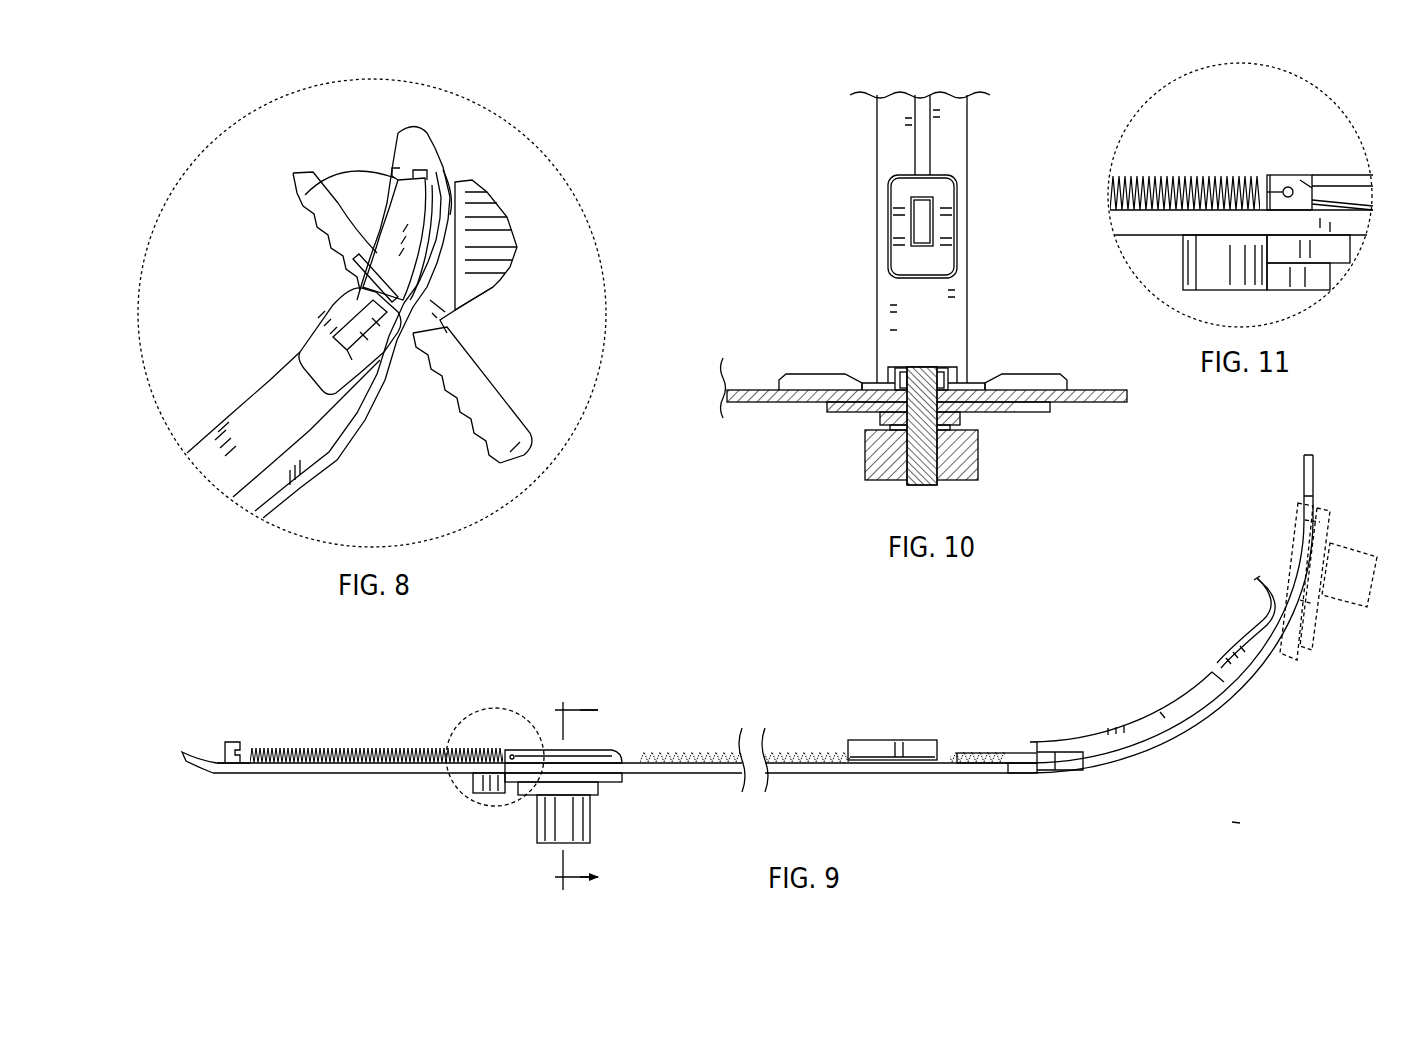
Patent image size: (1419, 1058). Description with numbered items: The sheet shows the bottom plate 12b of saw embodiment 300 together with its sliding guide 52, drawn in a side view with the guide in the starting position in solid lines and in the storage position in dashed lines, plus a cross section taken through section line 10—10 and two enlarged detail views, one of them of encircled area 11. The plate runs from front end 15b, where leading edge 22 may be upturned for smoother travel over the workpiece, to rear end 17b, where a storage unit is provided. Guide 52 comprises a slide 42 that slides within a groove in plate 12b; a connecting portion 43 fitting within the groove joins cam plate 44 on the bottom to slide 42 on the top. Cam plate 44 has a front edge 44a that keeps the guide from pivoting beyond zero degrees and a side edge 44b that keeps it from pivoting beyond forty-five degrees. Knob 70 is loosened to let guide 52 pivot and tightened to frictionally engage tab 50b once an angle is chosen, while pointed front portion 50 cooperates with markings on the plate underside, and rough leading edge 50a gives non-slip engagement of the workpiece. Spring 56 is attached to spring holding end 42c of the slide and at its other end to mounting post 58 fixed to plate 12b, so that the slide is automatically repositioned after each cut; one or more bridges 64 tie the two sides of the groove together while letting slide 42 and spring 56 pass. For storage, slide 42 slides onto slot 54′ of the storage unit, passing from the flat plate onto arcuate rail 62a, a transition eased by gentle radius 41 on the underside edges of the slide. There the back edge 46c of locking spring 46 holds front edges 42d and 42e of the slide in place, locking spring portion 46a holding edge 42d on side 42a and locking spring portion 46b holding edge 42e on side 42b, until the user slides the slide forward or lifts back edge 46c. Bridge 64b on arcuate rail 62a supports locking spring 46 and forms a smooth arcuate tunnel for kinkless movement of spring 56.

In FIG. 9, the section line 10— 10 is at (590, 794).
In FIG. 9, the encircled area 11 is at (455, 737).
In FIG. 9, the bottom plate 12b is at (362, 775).
In FIG. 9, the front end 15b is at (190, 712).
In FIG. 9, the rear end 17b is at (1030, 789).
In FIG. 9, the leading edge 22 is at (193, 762).
In FIG. 11, the gentle radius 41 is at (1300, 204).
In FIG. 8, the slide 42 is at (424, 254).
In FIG. 10, the slide 42 is at (921, 375).
In FIG. 11, the slide 42 is at (1333, 172).
In FIG. 8, the side of slide 42a is at (448, 186).
In FIG. 10, the side of slide 42a is at (955, 380).
In FIG. 11, the side of slide 42a is at (1352, 178).
In FIG. 8, the side of slide 42b is at (398, 175).
In FIG. 10, the side of slide 42b is at (905, 380).
In FIG. 11, the spring holding end 42c is at (1268, 178).
In FIG. 9, the front edge of slide 42d is at (1320, 612).
In FIG. 11, the front edge of slide 42d is at (1298, 180).
In FIG. 11, the front edge of slide 42e is at (1300, 180).
In FIG. 10, the connecting portion 43 is at (918, 375).
In FIG. 8, the cam plate 44 is at (345, 190).
In FIG. 9, the cam plate 44 is at (622, 777).
In FIG. 10, the cam plate 44 is at (845, 412).
In FIG. 11, the cam plate 44 is at (1345, 250).
In FIG. 8, the front edge of cam plate 44a is at (320, 238).
In FIG. 8, the side edge of cam plate 44b is at (470, 318).
In FIG. 8, the locking spring 46 is at (318, 320).
In FIG. 9, the locking spring 46 is at (1228, 631).
In FIG. 10, the locking spring 46 is at (949, 249).
In FIG. 8, the locking spring portion 46a is at (385, 368).
In FIG. 9, the locking spring portion 46a is at (1262, 625).
In FIG. 10, the locking spring portion 46a is at (947, 222).
In FIG. 8, the locking spring portion 46b is at (358, 293).
In FIG. 10, the locking spring portion 46b is at (895, 217).
In FIG. 9, the back edge of locking spring 46c is at (1258, 585).
In FIG. 10, the back edge of locking spring 46c is at (935, 187).
In FIG. 8, the pointed front portion 50 is at (485, 378).
In FIG. 9, the pointed front portion 50 is at (478, 783).
In FIG. 11, the pointed front portion 50 is at (1225, 290).
In FIG. 8, the rough leading edge 50a is at (470, 445).
In FIG. 11, the rough leading edge 50a is at (1188, 258).
In FIG. 9, the tab 50b is at (598, 790).
In FIG. 10, the tab 50b is at (965, 420).
In FIG. 8, the sliding guide 52 is at (265, 178).
In FIG. 9, the sliding guide 52 is at (492, 822).
In FIG. 8, the slot 54′ is at (420, 172).
In FIG. 10, the slot 54′ is at (925, 137).
In FIG. 9, the spring 56 is at (347, 748).
In FIG. 11, the spring 56 is at (1178, 175).
In FIG. 9, the mounting post 58 is at (232, 742).
In FIG. 8, the arcuate rail 62a is at (335, 460).
In FIG. 9, the arcuate rail 62a is at (1200, 722).
In FIG. 10, the arcuate rail 62a is at (888, 157).
In FIG. 9, the bridge 64 is at (878, 740).
In FIG. 10, the bridge 64 is at (942, 365).
In FIG. 8, the bridge 64b is at (268, 398).
In FIG. 9, the bridge 64b is at (1160, 712).
In FIG. 10, the bridge 64b is at (897, 293).
In FIG. 8, the knob 70 is at (512, 240).
In FIG. 9, the knob 70 is at (545, 828).
In FIG. 10, the knob 70 is at (885, 482).
In FIG. 9, the saw embodiment 300 is at (1232, 822).